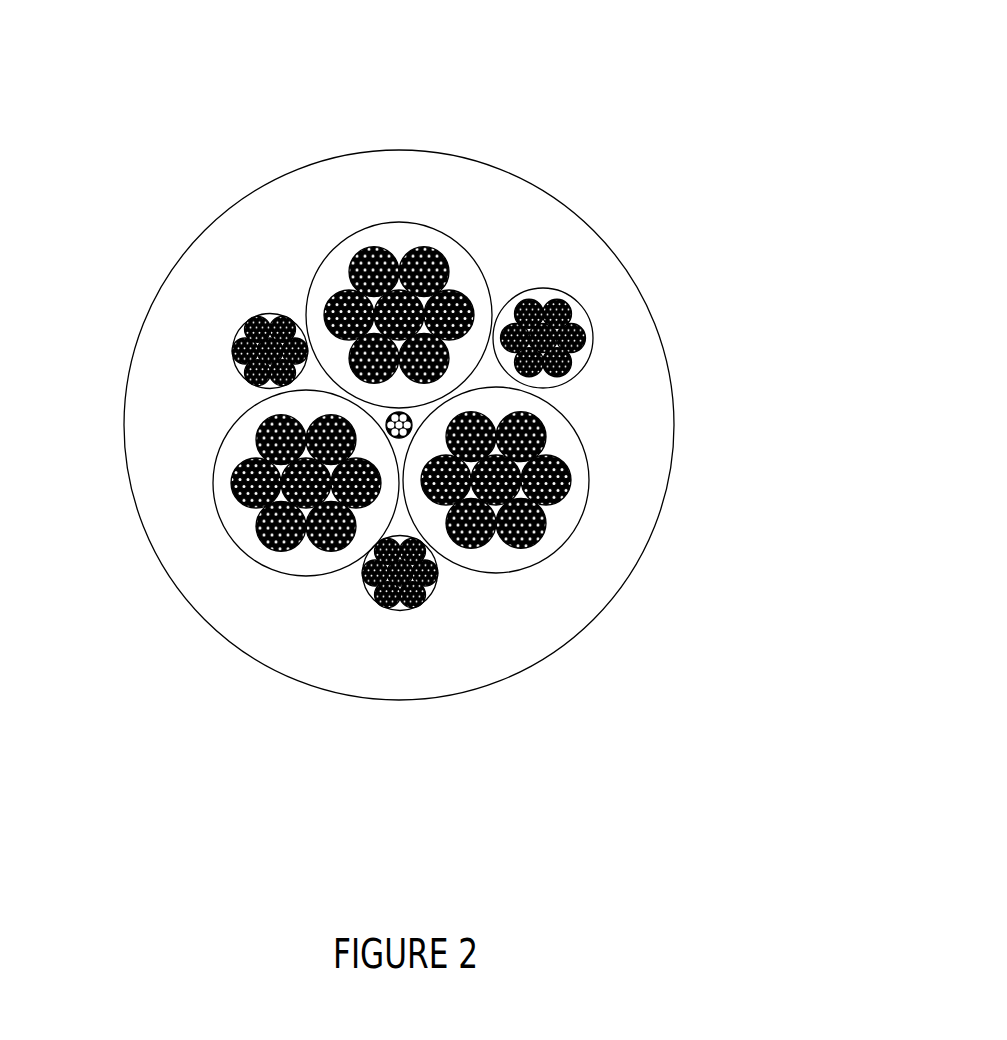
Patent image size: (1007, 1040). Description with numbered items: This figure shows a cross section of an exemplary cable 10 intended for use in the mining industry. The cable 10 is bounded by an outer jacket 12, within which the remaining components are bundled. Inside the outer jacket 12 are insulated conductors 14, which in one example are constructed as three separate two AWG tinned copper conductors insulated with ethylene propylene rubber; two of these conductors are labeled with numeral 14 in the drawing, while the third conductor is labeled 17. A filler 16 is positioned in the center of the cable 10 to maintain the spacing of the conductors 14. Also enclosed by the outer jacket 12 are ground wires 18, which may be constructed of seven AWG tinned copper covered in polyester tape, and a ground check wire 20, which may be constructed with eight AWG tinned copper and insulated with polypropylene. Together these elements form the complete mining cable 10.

The cable 10 is at (399, 372).
The outer jacket 12 is at (553, 196).
The insulated conductors 14 is at (333, 280).
The filler 16 is at (384, 419).
The strand 17 is at (550, 430).
The ground wires 18 is at (231, 340).
The ground check wire 20 is at (563, 303).